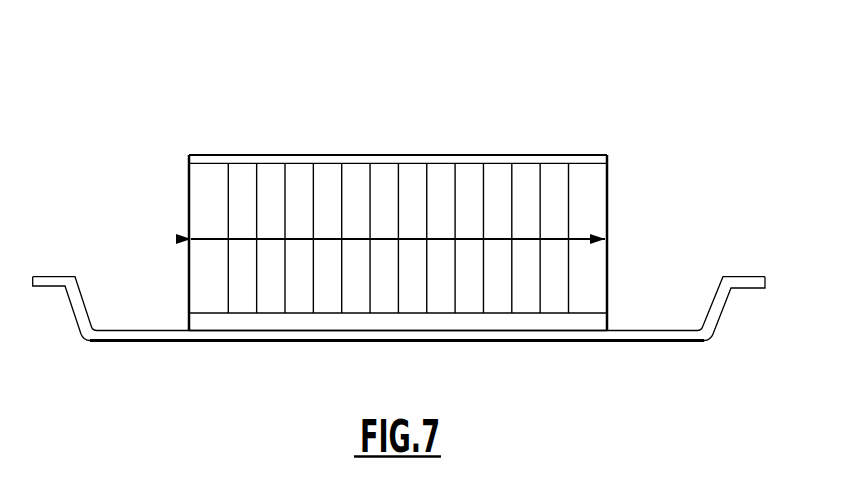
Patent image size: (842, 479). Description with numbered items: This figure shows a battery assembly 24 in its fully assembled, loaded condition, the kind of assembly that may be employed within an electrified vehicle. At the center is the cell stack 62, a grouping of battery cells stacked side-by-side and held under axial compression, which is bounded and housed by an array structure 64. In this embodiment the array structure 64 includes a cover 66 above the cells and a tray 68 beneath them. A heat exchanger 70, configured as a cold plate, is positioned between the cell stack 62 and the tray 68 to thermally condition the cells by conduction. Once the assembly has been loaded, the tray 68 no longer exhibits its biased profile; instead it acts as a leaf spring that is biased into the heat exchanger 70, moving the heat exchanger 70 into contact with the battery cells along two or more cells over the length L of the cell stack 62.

The battery assembly 24 is at (393, 204).
The cell stack 62 is at (167, 200).
The array structure 64 is at (622, 158).
The cover 66 is at (516, 160).
The tray 68 is at (420, 341).
The heat exchanger 70 is at (507, 322).
The length of the cell stack L is at (464, 238).